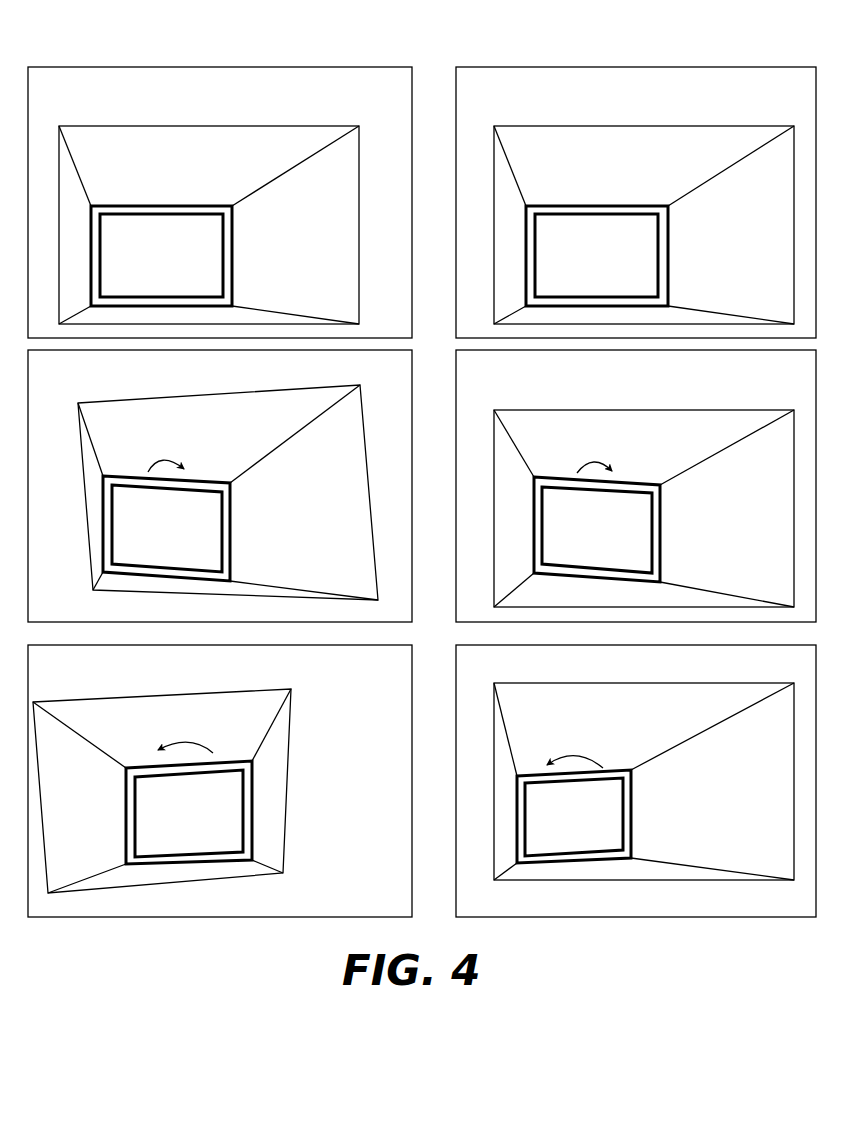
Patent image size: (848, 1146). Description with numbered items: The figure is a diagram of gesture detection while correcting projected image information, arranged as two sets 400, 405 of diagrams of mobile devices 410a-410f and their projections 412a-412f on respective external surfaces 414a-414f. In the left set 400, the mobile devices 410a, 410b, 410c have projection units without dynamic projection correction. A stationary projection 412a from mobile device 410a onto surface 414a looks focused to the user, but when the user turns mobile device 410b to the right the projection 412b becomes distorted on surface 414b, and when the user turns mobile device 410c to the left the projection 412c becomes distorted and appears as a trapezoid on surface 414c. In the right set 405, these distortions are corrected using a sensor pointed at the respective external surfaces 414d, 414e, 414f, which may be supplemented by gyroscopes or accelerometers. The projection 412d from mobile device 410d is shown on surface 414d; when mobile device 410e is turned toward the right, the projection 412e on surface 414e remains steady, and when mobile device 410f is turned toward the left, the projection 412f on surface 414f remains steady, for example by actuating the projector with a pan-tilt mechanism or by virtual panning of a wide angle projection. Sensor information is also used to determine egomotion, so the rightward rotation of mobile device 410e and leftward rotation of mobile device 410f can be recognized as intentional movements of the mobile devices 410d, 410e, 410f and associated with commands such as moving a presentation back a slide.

The set of diagrams 400 is at (221, 40).
The set of diagrams 405 is at (652, 40).
The surface 414a is at (231, 90).
The surface 414b is at (227, 372).
The surface 414c is at (238, 666).
The surface 414d is at (655, 90).
The surface 414e is at (654, 376).
The surface 414f is at (656, 666).
The projection 412a is at (187, 126).
The projection 412b is at (227, 393).
The projection 412c is at (127, 699).
The projection 412d is at (601, 126).
The projection 412e is at (645, 410).
The projection 412f is at (660, 683).
The mobile device 410a is at (163, 206).
The mobile device 410b is at (130, 564).
The mobile device 410c is at (172, 852).
The mobile device 410d is at (577, 206).
The mobile device 410e is at (620, 484).
The mobile device 410f is at (632, 802).